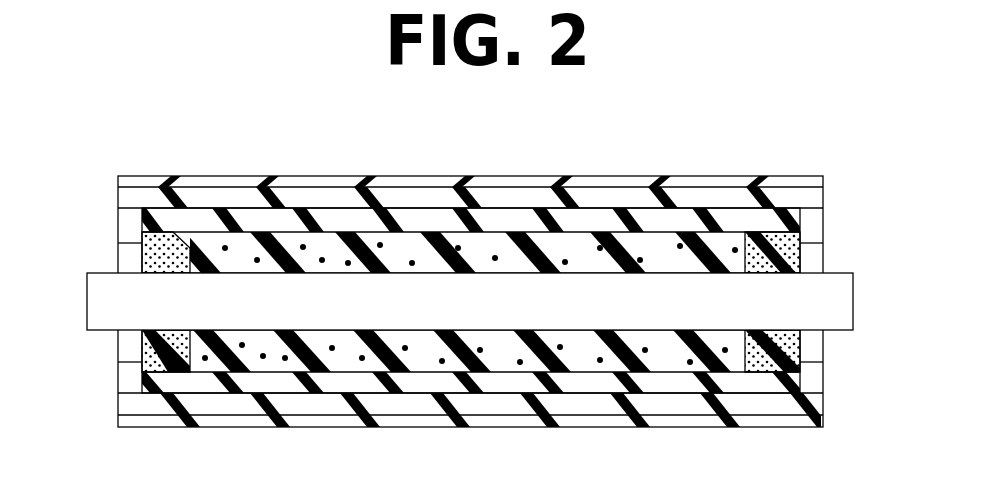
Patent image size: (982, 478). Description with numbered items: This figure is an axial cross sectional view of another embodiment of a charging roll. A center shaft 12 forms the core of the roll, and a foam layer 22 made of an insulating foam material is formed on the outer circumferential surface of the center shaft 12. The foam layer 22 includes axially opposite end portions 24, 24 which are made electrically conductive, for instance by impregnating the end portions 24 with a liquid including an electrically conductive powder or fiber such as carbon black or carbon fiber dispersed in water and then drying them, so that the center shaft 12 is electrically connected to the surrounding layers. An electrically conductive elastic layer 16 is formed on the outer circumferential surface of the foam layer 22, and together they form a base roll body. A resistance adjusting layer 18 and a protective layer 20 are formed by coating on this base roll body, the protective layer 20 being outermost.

The center shaft 12 is at (832, 322).
The conductive elastic layer 16 is at (610, 220).
The resistance adjusting layer 18 is at (322, 192).
The protective layer 20 is at (205, 176).
The foam layer 22 is at (718, 238).
The end portions 24 is at (790, 262).